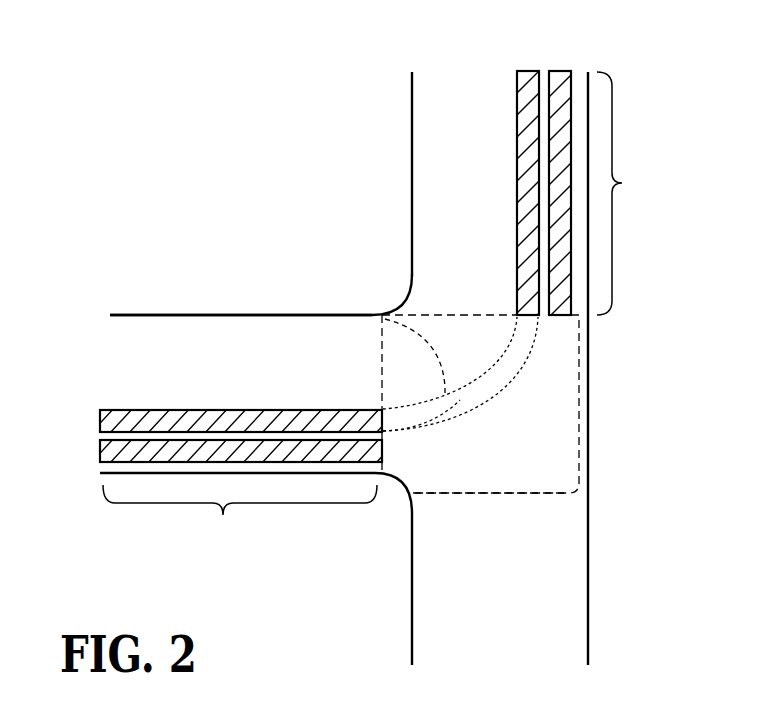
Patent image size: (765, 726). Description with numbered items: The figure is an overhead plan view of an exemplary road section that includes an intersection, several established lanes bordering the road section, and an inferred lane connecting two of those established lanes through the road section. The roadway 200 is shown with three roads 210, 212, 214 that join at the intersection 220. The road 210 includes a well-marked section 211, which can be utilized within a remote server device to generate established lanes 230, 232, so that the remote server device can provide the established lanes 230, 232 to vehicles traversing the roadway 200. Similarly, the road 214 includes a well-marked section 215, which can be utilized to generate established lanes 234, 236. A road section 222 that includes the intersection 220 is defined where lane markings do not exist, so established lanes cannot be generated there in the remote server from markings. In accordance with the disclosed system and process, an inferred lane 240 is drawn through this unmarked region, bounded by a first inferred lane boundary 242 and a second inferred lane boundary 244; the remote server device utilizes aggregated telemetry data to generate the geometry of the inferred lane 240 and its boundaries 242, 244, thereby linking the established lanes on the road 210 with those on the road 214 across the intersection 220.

The roadway 200 is at (254, 330).
The road 210 is at (180, 330).
The well-marked section 211 is at (240, 515).
The road 212 is at (556, 557).
The road 214 is at (444, 122).
The well-marked section 215 is at (632, 193).
The intersection 220 is at (557, 407).
The road section 222 is at (538, 494).
The established lane 230 is at (100, 449).
The established lane 232 is at (100, 418).
The established lane 234 is at (523, 72).
The established lane 236 is at (555, 72).
The inferred lane 240 is at (417, 423).
The first inferred lane boundary 242 is at (527, 362).
The second inferred lane boundary 244 is at (380, 322).